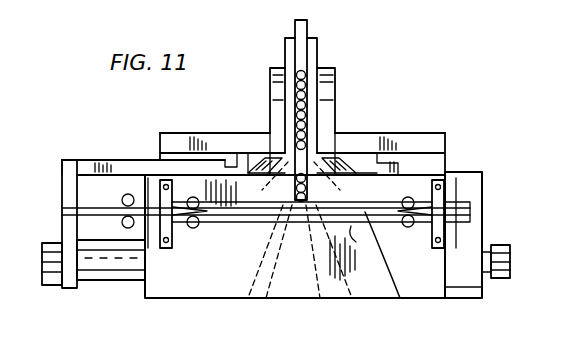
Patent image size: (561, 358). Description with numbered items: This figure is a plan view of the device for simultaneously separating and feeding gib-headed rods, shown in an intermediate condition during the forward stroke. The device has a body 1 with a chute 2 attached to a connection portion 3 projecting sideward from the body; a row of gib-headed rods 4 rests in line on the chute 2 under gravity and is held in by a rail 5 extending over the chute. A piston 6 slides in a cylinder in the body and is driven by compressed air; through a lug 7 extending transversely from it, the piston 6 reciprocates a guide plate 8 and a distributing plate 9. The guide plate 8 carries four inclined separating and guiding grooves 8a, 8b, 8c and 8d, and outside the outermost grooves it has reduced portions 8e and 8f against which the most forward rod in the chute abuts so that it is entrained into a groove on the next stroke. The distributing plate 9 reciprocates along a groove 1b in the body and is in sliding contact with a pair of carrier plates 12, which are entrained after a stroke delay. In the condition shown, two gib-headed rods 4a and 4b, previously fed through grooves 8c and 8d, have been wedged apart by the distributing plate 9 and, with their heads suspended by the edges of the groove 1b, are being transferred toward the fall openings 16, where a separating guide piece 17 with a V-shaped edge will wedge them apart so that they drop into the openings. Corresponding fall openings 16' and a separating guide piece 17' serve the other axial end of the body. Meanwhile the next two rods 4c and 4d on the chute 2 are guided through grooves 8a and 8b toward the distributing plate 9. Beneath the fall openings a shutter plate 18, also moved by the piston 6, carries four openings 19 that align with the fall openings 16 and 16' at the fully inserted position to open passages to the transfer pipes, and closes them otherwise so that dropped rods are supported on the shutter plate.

The body 1 is at (465, 292).
The groove 1b is at (366, 244).
The chute 2 is at (318, 60).
The connection portion 3 is at (420, 135).
The gib-headed rods 4 is at (302, 88).
The gib-headed rod 4a is at (259, 267).
The gib-headed rod 4b is at (281, 267).
The gib-headed rod 4c is at (318, 267).
The gib-headed rod 4d is at (343, 267).
The rail 5 is at (308, 24).
The piston 6 is at (97, 272).
The lug 7 is at (70, 288).
The guide plate 8 is at (62, 165).
The separating and guiding groove 8a is at (250, 172).
The separating and guiding groove 8b is at (264, 178).
The separating and guiding groove 8c is at (326, 172).
The separating and guiding groove 8d is at (342, 172).
The reduced portion 8e is at (245, 180).
The reduced portion 8f is at (360, 172).
The distributing plate 9 is at (62, 209).
The carrier plates 12 is at (392, 271).
The fall openings 16 is at (185, 220).
The fall openings 16' is at (466, 194).
The separating guide piece 17 is at (152, 177).
The separating guide piece 17' is at (489, 207).
The shutter plate 18 is at (92, 178).
The openings 19 is at (128, 194).